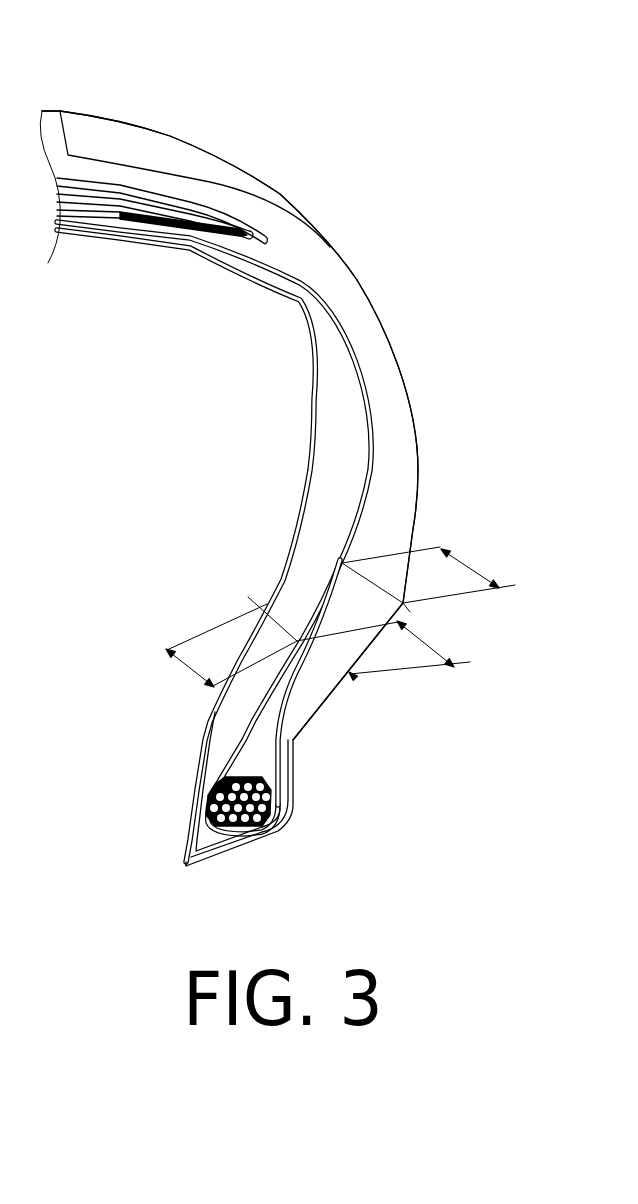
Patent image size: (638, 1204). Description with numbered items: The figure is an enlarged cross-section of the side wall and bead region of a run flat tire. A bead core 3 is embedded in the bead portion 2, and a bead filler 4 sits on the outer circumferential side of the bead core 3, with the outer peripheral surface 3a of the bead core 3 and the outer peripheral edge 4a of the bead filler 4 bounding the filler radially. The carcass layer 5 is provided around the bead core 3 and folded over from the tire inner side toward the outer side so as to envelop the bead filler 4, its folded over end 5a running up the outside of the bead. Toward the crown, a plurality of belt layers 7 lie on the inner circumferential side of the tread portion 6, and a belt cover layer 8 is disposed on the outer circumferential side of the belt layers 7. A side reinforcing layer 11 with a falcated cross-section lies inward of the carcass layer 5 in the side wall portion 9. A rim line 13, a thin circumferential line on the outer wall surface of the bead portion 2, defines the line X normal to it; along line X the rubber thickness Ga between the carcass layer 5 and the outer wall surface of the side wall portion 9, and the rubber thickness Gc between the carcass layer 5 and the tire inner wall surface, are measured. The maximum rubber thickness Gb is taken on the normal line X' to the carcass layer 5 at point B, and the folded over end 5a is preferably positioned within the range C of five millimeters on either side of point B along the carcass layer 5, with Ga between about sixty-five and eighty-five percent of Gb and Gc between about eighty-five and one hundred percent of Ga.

The bead portion 2 is at (394, 782).
The bead core 3 is at (232, 828).
The outer peripheral surface of the bead core 3a is at (293, 813).
The bead filler 4 is at (260, 753).
The outer peripheral edge of the bead filler 4a is at (332, 665).
The carcass layer 5 is at (313, 307).
The folded over end of the carcass layer 5a is at (315, 557).
The tread portion 6 is at (53, 110).
The belt layers 7 is at (123, 215).
The belt cover layer 8 is at (193, 200).
The side wall portion 9 is at (432, 421).
The side reinforcing layer 11 is at (340, 413).
The rim line 13 is at (350, 673).
The point B is at (342, 563).
The range C is at (310, 577).
The line X is at (402, 699).
The normal line X' is at (466, 607).
The rubber thickness Ga is at (384, 644).
The maximum rubber thickness Gb is at (473, 564).
The rubber thickness Gc is at (226, 648).